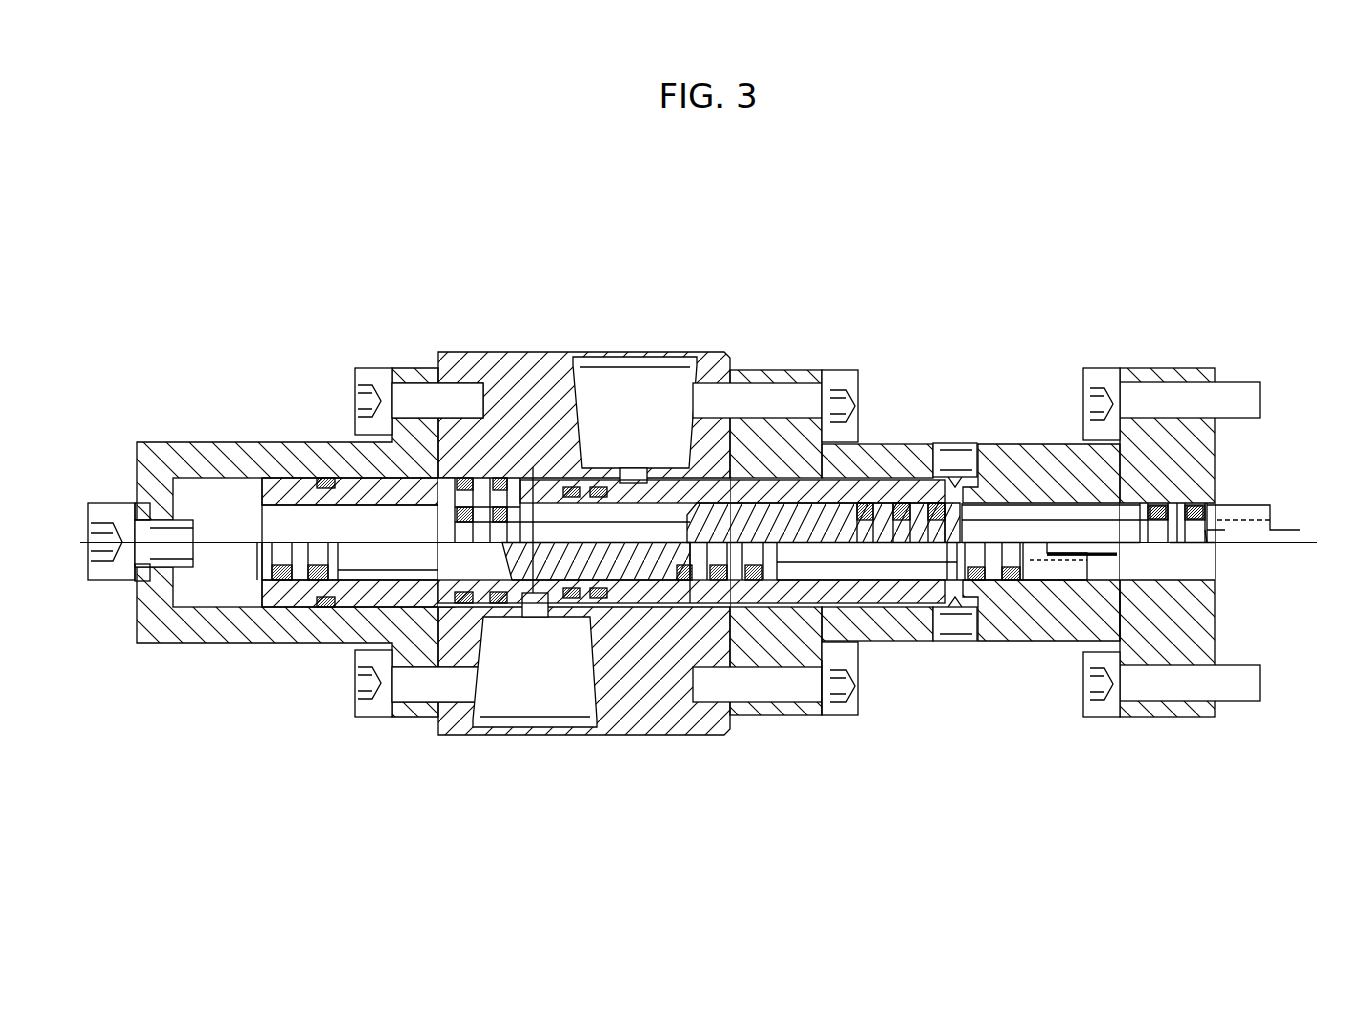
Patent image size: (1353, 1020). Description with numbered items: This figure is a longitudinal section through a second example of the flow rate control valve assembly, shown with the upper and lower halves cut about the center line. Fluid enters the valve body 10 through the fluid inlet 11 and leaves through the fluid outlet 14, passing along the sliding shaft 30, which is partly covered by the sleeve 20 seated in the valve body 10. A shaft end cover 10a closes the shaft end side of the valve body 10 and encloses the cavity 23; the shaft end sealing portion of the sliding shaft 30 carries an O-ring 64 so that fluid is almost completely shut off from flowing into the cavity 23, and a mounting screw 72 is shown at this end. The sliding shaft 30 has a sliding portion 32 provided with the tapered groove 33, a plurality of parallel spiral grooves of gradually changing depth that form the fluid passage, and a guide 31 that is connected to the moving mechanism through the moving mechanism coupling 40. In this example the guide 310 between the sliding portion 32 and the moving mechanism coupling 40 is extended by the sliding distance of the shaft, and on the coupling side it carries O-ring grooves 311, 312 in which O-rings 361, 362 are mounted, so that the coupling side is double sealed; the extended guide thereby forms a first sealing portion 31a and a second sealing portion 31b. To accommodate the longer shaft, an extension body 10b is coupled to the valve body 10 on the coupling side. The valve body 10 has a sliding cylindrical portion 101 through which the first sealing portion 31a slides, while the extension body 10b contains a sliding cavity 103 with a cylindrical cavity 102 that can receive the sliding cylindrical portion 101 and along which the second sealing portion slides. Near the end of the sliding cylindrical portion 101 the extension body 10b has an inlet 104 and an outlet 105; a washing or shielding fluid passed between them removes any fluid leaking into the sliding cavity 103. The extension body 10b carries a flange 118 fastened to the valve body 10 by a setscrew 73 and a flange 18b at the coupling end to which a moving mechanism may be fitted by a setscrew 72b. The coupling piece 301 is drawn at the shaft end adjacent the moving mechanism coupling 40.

The valve body 10 is at (527, 350).
The shaft end cover 10a is at (222, 442).
The extension body 10b is at (1005, 443).
The fluid inlet 11 is at (655, 357).
The fluid outlet 14 is at (518, 730).
The flange 18b is at (1180, 367).
The sleeve 20 is at (392, 482).
The cavity 23 is at (220, 585).
The sliding shaft 30 is at (798, 515).
The guide 31 is at (950, 527).
The first sealing portion 31a is at (897, 537).
The second sealing portion 31b is at (1208, 540).
The sliding portion 32 is at (815, 527).
The tapered groove 33 is at (827, 532).
The moving mechanism coupling 40 is at (1250, 507).
The O-ring 64 is at (490, 500).
The mounting screw 72 is at (122, 515).
The setscrew 72b is at (1103, 367).
The setscrew 73 is at (853, 373).
The sliding cylindrical portion 101 is at (847, 712).
The cylindrical cavity 102 is at (900, 478).
The sliding cavity 103 is at (1127, 600).
The inlet 104 is at (960, 455).
The outlet 105 is at (957, 628).
The flange 118 is at (748, 368).
The coupling 301 is at (1080, 555).
The guide 310 is at (1040, 530).
The O-ring groove 311 is at (1192, 532).
The O-ring groove 312 is at (1157, 532).
The O-ring 361 is at (1199, 503).
The O-ring 362 is at (1165, 503).